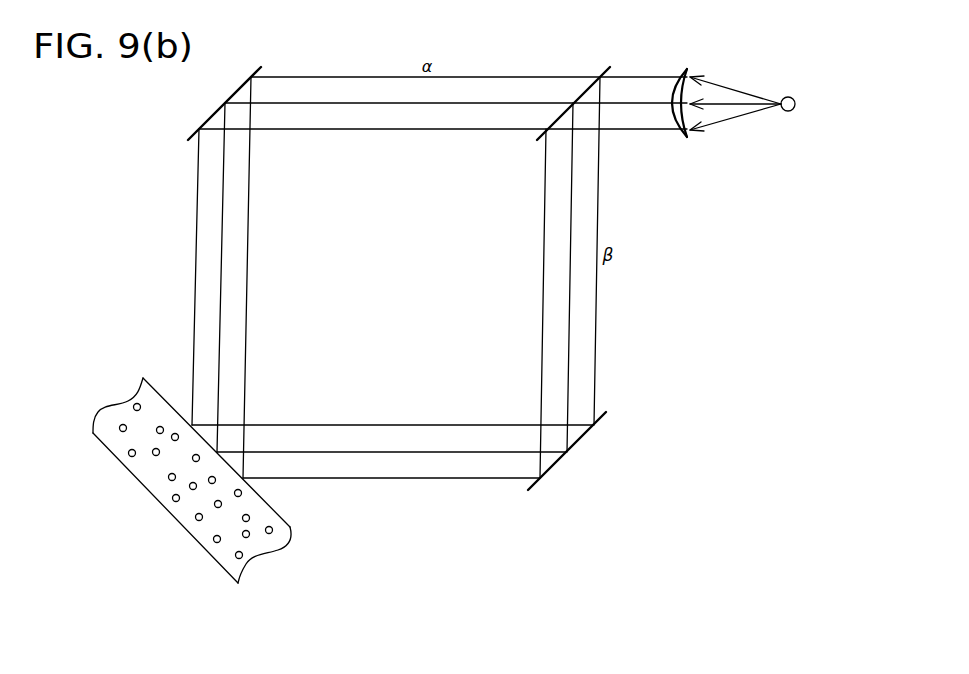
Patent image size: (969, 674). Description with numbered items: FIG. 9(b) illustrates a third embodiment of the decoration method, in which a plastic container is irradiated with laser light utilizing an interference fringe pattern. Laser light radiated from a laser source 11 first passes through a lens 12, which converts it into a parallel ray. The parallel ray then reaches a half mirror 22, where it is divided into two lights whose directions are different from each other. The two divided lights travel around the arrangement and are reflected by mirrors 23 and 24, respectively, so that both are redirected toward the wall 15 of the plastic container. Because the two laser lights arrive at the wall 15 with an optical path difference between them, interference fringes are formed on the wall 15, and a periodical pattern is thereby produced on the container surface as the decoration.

The laser source 11 is at (788, 97).
The lens 12 is at (691, 74).
The wall of the plastic container 15 is at (158, 386).
The half mirror 22 is at (609, 66).
The mirror 23 is at (262, 66).
The mirror 24 is at (588, 434).